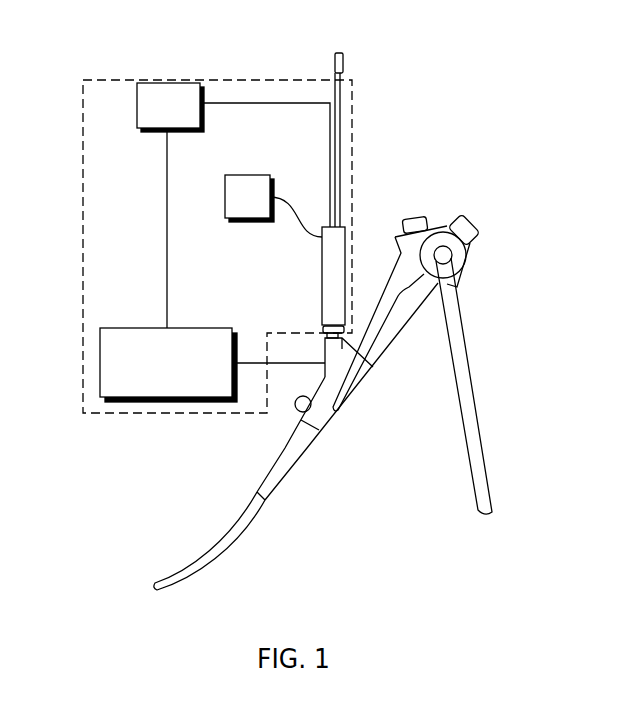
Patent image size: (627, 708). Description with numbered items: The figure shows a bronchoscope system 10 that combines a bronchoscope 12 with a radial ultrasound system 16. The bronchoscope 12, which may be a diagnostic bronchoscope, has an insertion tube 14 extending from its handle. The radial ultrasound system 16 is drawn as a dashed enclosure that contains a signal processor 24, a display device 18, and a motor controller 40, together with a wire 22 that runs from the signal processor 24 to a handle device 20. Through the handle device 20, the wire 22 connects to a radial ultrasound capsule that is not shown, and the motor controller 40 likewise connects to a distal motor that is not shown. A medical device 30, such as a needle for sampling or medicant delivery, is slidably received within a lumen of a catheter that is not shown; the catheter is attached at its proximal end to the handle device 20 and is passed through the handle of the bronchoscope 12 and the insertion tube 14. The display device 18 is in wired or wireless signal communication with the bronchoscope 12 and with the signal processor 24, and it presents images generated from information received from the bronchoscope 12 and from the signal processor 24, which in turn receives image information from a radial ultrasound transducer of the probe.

The bronchoscope system 10 is at (566, 93).
The bronchoscope 12 is at (297, 461).
The insertion tube 14 is at (205, 553).
The radial ultrasound system 16 is at (76, 96).
The display device 18 is at (100, 363).
The handle device 20 is at (348, 241).
The wire 22 is at (290, 103).
The signal processor 24 is at (136, 100).
The medical device 30 is at (345, 59).
The motor controller 40 is at (238, 221).